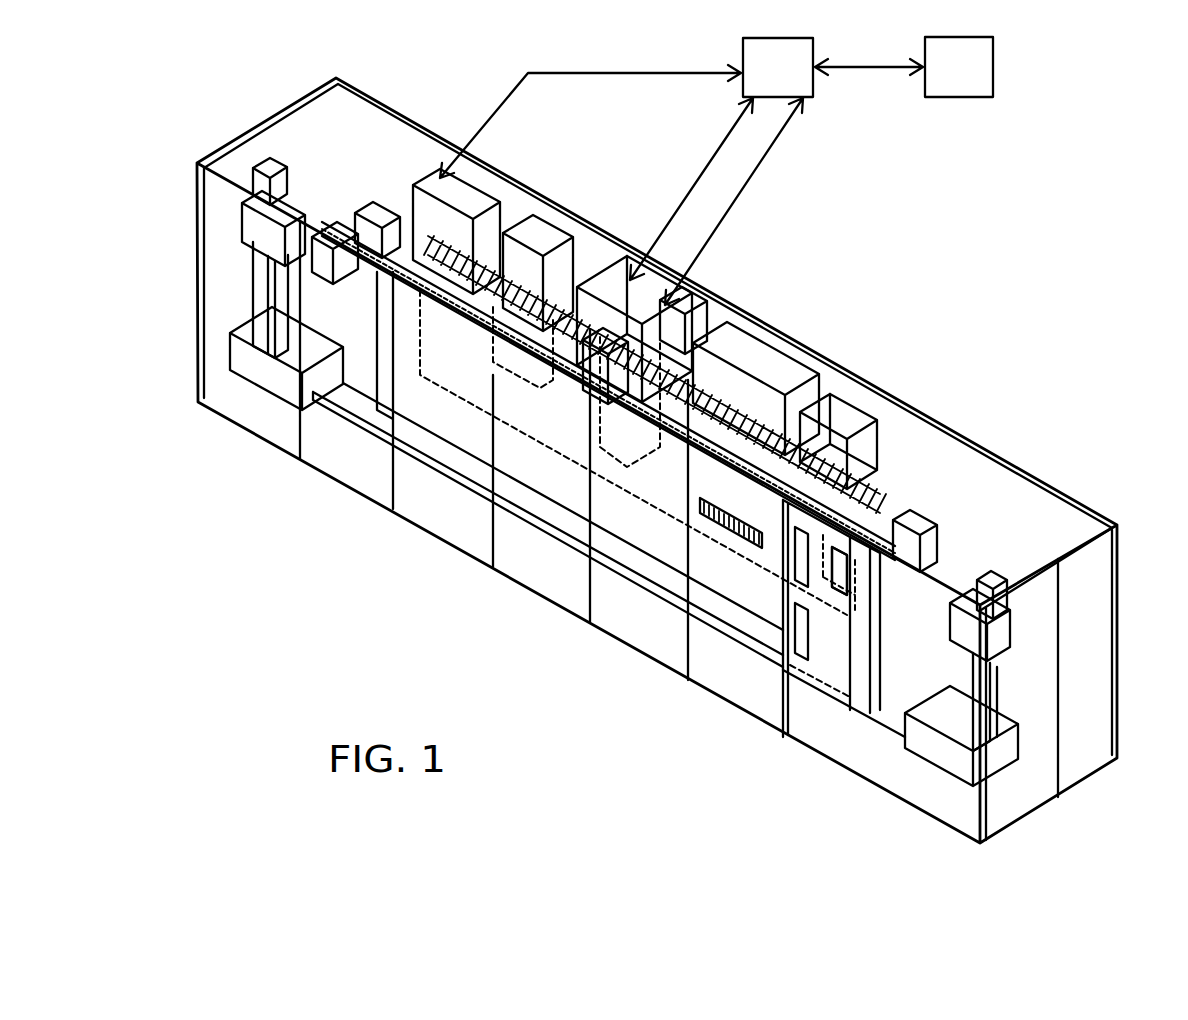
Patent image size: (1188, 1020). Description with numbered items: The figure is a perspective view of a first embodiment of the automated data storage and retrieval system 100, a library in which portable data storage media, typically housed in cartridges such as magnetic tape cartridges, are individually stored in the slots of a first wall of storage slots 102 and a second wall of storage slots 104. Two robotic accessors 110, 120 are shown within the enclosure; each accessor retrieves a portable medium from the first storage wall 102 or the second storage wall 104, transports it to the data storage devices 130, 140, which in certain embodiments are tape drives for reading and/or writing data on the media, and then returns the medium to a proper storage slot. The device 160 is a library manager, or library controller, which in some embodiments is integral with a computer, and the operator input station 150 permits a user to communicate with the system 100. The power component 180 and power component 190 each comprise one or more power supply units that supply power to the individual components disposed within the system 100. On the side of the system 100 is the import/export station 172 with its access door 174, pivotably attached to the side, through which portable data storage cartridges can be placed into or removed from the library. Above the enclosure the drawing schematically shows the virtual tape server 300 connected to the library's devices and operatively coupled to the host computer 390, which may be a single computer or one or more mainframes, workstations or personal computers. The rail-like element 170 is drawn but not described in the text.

The automated data storage and retrieval system 100 is at (708, 759).
The first wall of storage slots 102 is at (543, 200).
The second wall of storage slots 104 is at (427, 418).
The accessor 110 is at (250, 227).
The accessor 120 is at (1017, 637).
The data storage device 130 is at (622, 262).
The data storage device 140 is at (700, 292).
The operator input station 150 is at (580, 218).
The library manager 160 is at (495, 182).
The transport rail 170 is at (530, 513).
The import/export station 172 is at (860, 693).
The access door 174 is at (813, 667).
The power component 180 is at (913, 515).
The power component 190 is at (897, 575).
The virtual tape server 300 is at (798, 83).
The host computer 390 is at (979, 83).